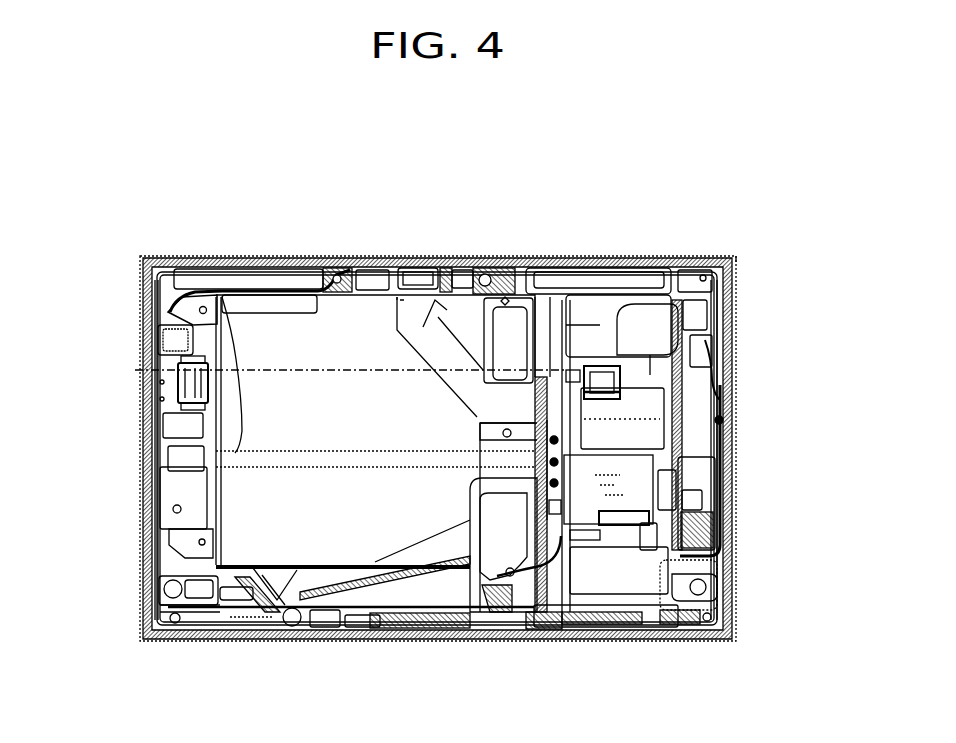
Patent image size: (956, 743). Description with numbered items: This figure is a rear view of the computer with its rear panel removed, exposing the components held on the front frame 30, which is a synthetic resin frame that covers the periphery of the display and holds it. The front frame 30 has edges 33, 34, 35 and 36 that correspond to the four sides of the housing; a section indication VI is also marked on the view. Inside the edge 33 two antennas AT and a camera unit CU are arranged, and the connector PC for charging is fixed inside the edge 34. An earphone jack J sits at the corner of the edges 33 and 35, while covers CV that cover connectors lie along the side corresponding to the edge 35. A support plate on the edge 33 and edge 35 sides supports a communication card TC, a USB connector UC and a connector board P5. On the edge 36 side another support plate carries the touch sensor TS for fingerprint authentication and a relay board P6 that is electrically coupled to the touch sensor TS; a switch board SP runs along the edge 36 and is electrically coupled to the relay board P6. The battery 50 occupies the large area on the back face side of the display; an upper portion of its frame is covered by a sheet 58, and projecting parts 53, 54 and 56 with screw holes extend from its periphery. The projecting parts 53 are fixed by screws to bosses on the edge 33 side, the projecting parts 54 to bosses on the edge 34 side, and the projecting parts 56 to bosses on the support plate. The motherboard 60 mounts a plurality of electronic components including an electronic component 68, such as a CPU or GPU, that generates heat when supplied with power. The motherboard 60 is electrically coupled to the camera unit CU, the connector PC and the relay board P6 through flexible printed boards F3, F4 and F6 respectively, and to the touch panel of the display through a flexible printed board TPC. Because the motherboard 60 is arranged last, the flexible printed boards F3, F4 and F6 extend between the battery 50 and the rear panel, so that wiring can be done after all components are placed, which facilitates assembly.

The front frame 30 is at (727, 640).
The edge 33 is at (700, 256).
The edge 34 is at (238, 640).
The edge 35 is at (733, 587).
The edge 36 is at (140, 275).
The battery 50 is at (205, 640).
The projecting part 53 is at (336, 268).
The projecting part 54 is at (278, 640).
The projecting part 56 is at (182, 272).
The sheet 58 is at (260, 332).
The motherboard 60 is at (730, 533).
The electronic component 68 is at (623, 640).
The flexible printed board F3 is at (421, 285).
The flexible printed board F4 is at (355, 640).
The flexible printed board F6 is at (198, 300).
The camera unit CU is at (398, 285).
The connector PC is at (421, 640).
The flexible printed board TPC is at (590, 640).
The communication card TC is at (592, 333).
The antenna AT is at (288, 282).
The touch sensor TS is at (140, 360).
The connector UC is at (730, 386).
The cover CV is at (735, 413).
The earphone jack J is at (738, 258).
The connector board P5 is at (703, 473).
The relay board P6 is at (140, 500).
The switch board SP is at (140, 532).
The viewing direction VI is at (140, 368).